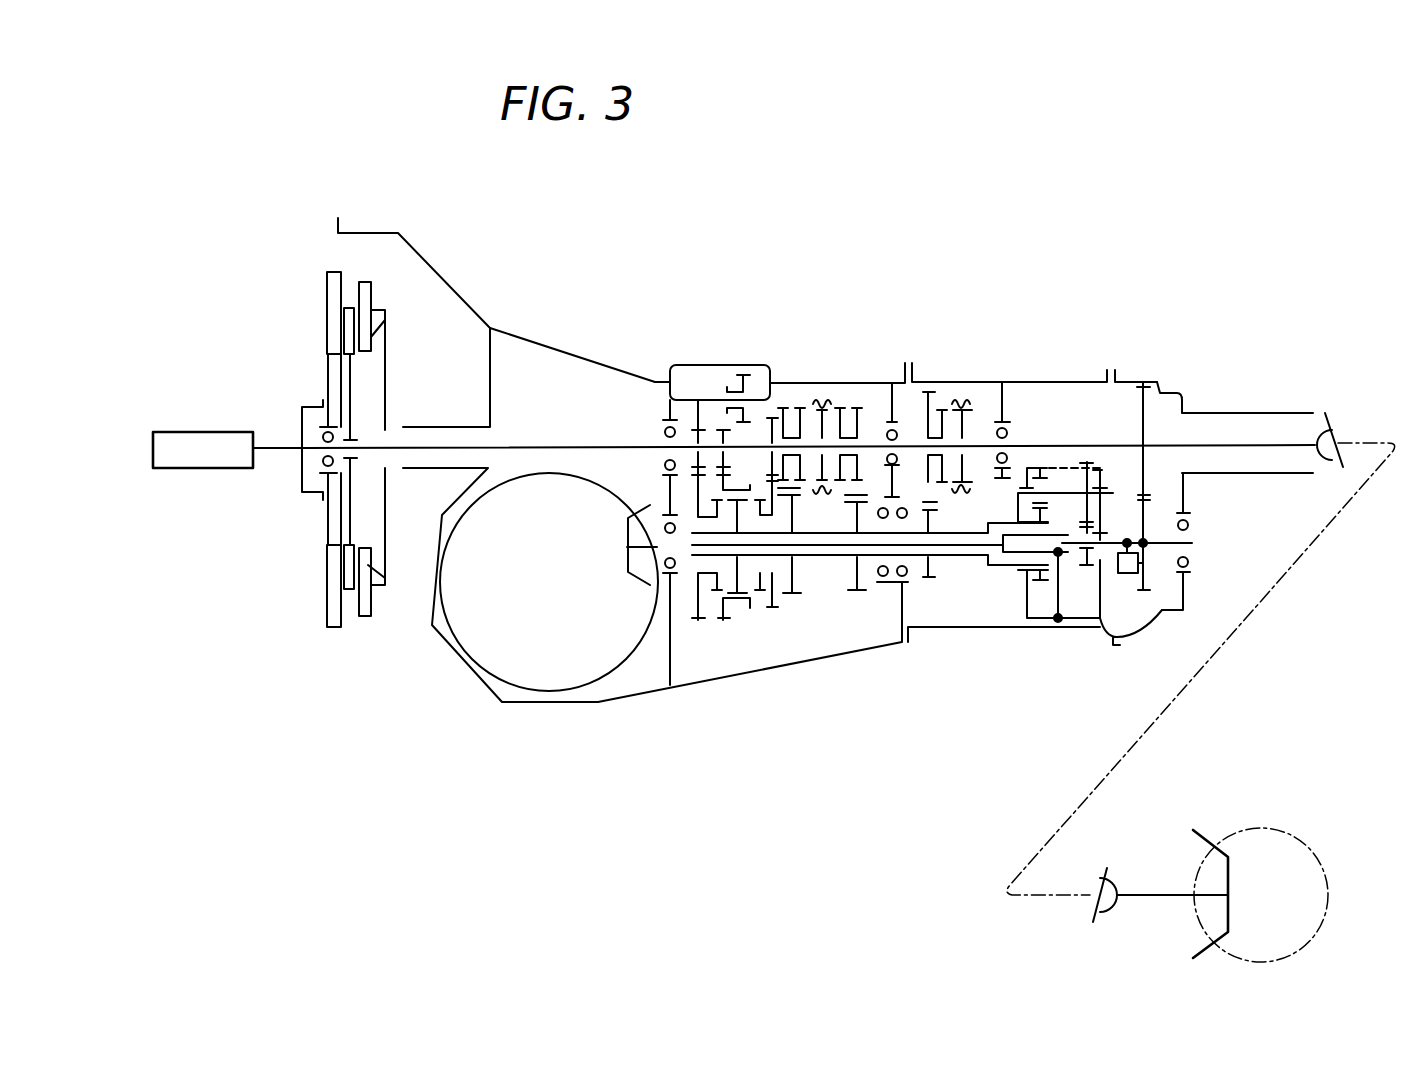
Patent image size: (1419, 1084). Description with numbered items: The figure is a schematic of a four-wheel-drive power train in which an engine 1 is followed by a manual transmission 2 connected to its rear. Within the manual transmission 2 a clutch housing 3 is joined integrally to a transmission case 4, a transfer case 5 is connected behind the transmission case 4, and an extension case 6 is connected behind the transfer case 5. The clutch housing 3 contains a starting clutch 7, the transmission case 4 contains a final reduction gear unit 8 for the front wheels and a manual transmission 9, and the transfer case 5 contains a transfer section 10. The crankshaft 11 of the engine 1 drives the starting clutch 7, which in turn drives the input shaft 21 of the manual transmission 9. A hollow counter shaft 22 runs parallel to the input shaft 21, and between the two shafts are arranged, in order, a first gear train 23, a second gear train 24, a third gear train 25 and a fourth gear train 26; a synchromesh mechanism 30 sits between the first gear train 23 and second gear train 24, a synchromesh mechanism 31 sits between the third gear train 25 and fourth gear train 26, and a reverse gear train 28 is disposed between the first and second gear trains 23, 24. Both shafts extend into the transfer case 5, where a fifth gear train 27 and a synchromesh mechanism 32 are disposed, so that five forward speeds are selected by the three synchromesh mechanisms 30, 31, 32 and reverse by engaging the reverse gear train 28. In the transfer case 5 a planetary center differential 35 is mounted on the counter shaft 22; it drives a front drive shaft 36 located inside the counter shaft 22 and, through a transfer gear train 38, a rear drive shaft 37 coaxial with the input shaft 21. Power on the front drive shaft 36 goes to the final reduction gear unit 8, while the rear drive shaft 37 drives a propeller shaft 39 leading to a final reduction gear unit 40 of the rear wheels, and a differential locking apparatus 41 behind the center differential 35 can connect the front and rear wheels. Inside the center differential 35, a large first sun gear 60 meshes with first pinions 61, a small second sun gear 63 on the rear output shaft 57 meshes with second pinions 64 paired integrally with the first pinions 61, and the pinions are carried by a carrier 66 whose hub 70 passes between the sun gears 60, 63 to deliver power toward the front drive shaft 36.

The engine 1 is at (207, 431).
The manual transmission 2 is at (802, 226).
The clutch housing 3 is at (469, 300).
The transmission case 4 is at (605, 366).
The transfer case 5 is at (1040, 466).
The extension case 6 is at (1265, 411).
The starting clutch 7 is at (390, 298).
The final reduction gear unit 8 is at (634, 674).
The manual transmission 9 is at (816, 614).
The transfer section 10 is at (1096, 414).
The crankshaft 11 is at (278, 446).
The input shaft 21 is at (556, 440).
The counter shaft 22 is at (830, 558).
The 1st gear train 23 is at (693, 404).
The 2nd gear train 24 is at (772, 609).
The 3rd gear train 25 is at (785, 406).
The 4th gear train 26 is at (855, 406).
The 5th gear train 27 is at (929, 390).
The reverse gear train 28 is at (726, 372).
The synchromesh mechanism 30 is at (745, 612).
The synchromesh mechanism 31 is at (824, 398).
The synchromesh mechanism 32 is at (963, 396).
The center differential 35 is at (1012, 606).
The front drive shaft 36 is at (965, 549).
The rear drive shaft 37 is at (1072, 442).
The transfer gear train 38 is at (1143, 384).
The propeller shaft 39 is at (1250, 617).
The final reduction gear unit 40 is at (1305, 834).
The differential locking apparatus 41 is at (1140, 578).
The rear output shaft 57 is at (1188, 541).
The first sun gear 60 is at (1057, 623).
The first pinion 61 is at (1036, 464).
The second sun gear 63 is at (1100, 622).
The second pinion 64 is at (1080, 462).
The carrier 66 is at (1128, 553).
The hub 70 is at (1087, 596).